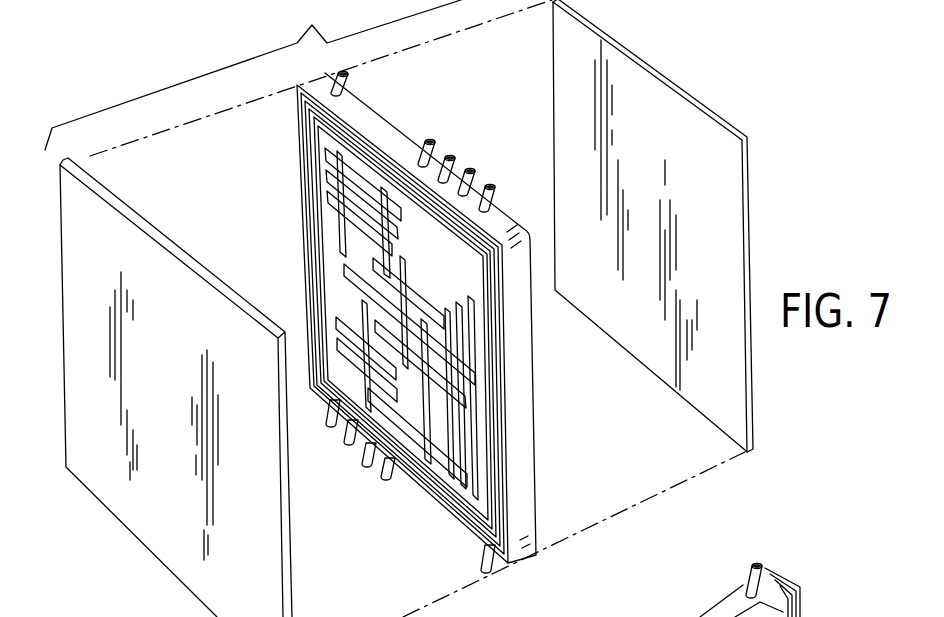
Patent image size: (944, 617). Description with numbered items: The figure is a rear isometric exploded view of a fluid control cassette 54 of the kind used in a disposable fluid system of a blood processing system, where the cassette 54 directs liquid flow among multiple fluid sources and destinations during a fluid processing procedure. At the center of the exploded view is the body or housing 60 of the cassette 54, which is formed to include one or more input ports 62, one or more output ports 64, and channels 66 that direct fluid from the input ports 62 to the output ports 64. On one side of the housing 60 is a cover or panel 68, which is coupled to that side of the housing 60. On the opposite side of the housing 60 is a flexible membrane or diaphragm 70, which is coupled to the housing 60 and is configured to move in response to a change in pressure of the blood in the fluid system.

The cassette 54 is at (253, 75).
The housing 60 is at (301, 172).
The input ports 62 is at (386, 481).
The output ports 64 is at (350, 78).
The channels 66 is at (492, 440).
The panel 68 is at (145, 525).
The diaphragm 70 is at (653, 105).